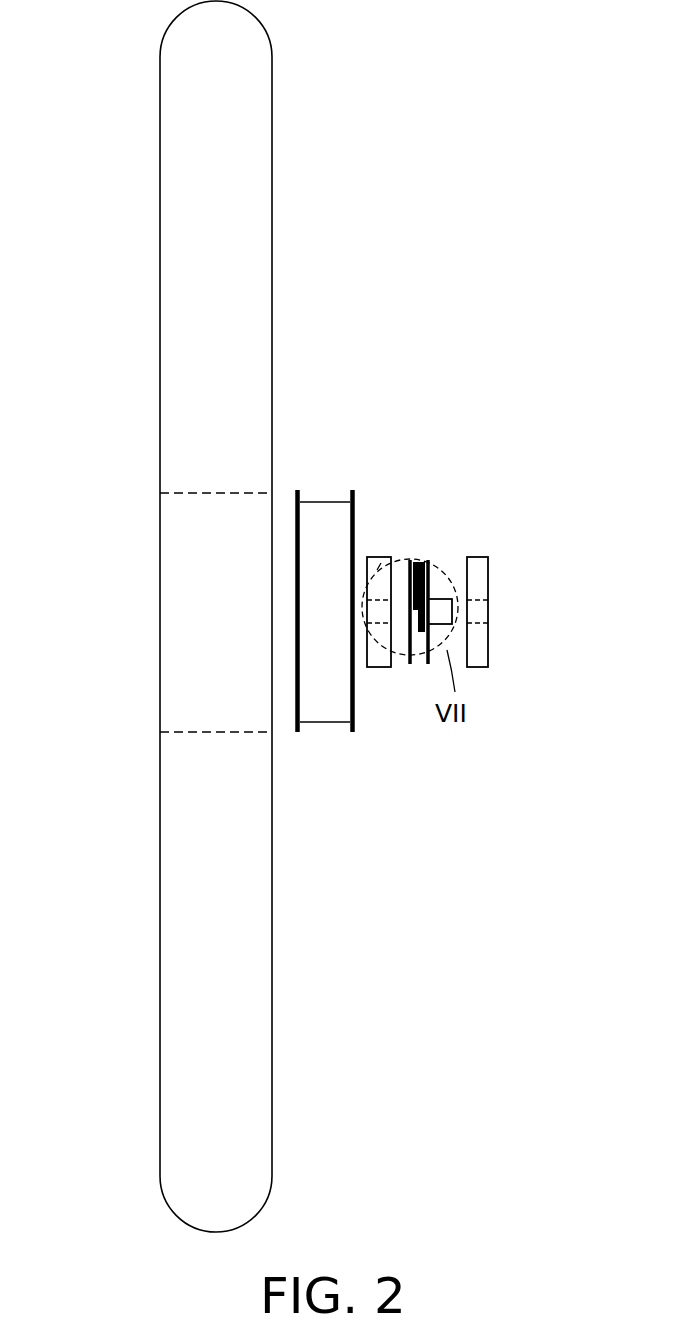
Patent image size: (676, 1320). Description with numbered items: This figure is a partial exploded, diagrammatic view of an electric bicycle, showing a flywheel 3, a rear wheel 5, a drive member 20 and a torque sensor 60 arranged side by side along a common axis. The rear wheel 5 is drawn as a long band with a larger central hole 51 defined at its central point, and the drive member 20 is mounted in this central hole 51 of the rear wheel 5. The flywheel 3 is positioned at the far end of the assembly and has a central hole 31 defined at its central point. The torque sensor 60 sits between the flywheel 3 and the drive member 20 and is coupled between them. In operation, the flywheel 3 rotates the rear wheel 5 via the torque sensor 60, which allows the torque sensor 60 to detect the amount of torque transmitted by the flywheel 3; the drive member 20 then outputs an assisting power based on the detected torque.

The rear wheel 5 is at (198, 888).
The central hole 51 is at (185, 602).
The drive member 20 is at (327, 510).
The torque sensor 60 is at (437, 552).
The flywheel 3 is at (480, 650).
The central hole 31 is at (480, 613).